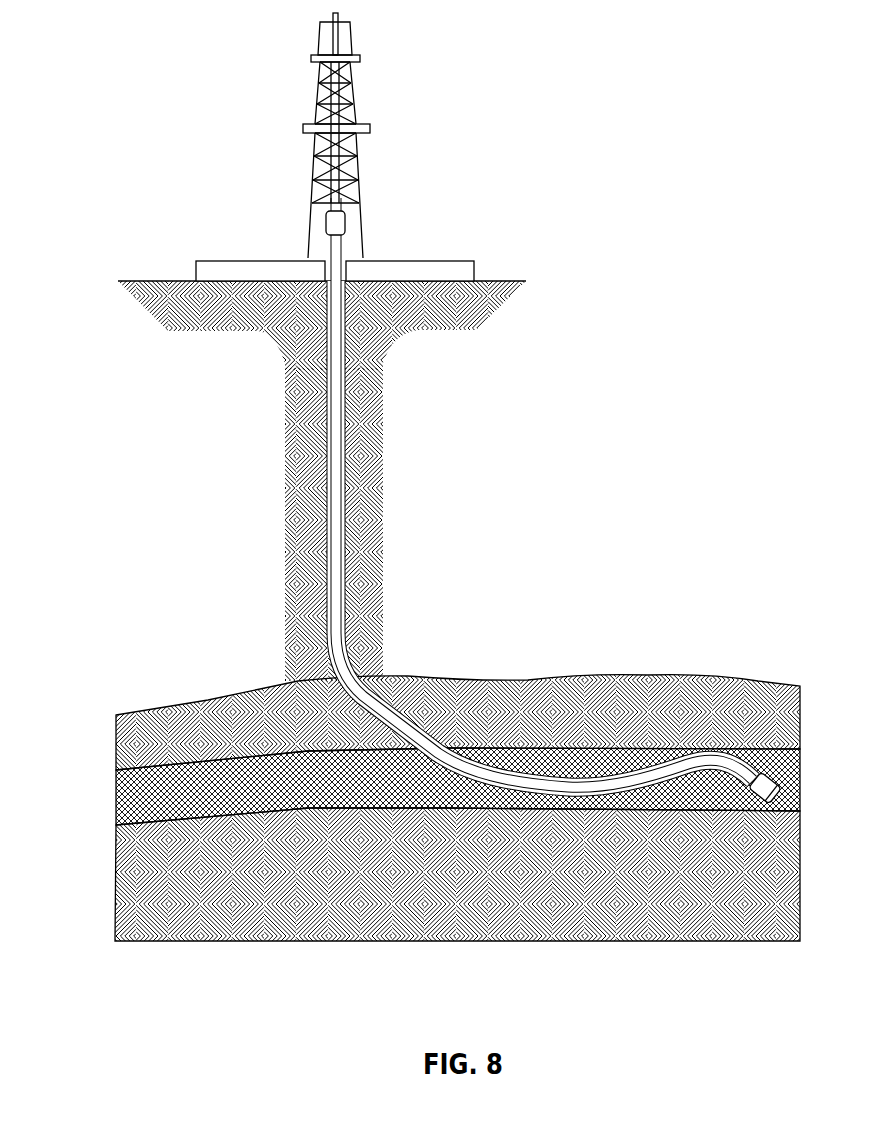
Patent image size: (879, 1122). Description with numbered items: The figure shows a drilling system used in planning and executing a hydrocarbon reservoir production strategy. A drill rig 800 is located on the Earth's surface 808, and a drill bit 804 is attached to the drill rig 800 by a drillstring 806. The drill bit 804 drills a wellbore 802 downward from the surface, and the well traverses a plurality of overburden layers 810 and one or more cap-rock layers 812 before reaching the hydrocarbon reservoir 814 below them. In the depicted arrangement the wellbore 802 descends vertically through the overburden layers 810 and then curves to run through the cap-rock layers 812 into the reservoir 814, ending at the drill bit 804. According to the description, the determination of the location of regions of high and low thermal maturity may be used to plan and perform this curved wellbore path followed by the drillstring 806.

The drill rig 800 is at (353, 147).
The wellbore 802 is at (317, 412).
The drill bit 804 is at (757, 766).
The drillstring 806 is at (330, 237).
The Earth's surface 808 is at (502, 272).
The overburden layers 810 is at (372, 402).
The cap-rock layers 812 is at (117, 728).
The hydrocarbon reservoir 814 is at (117, 800).